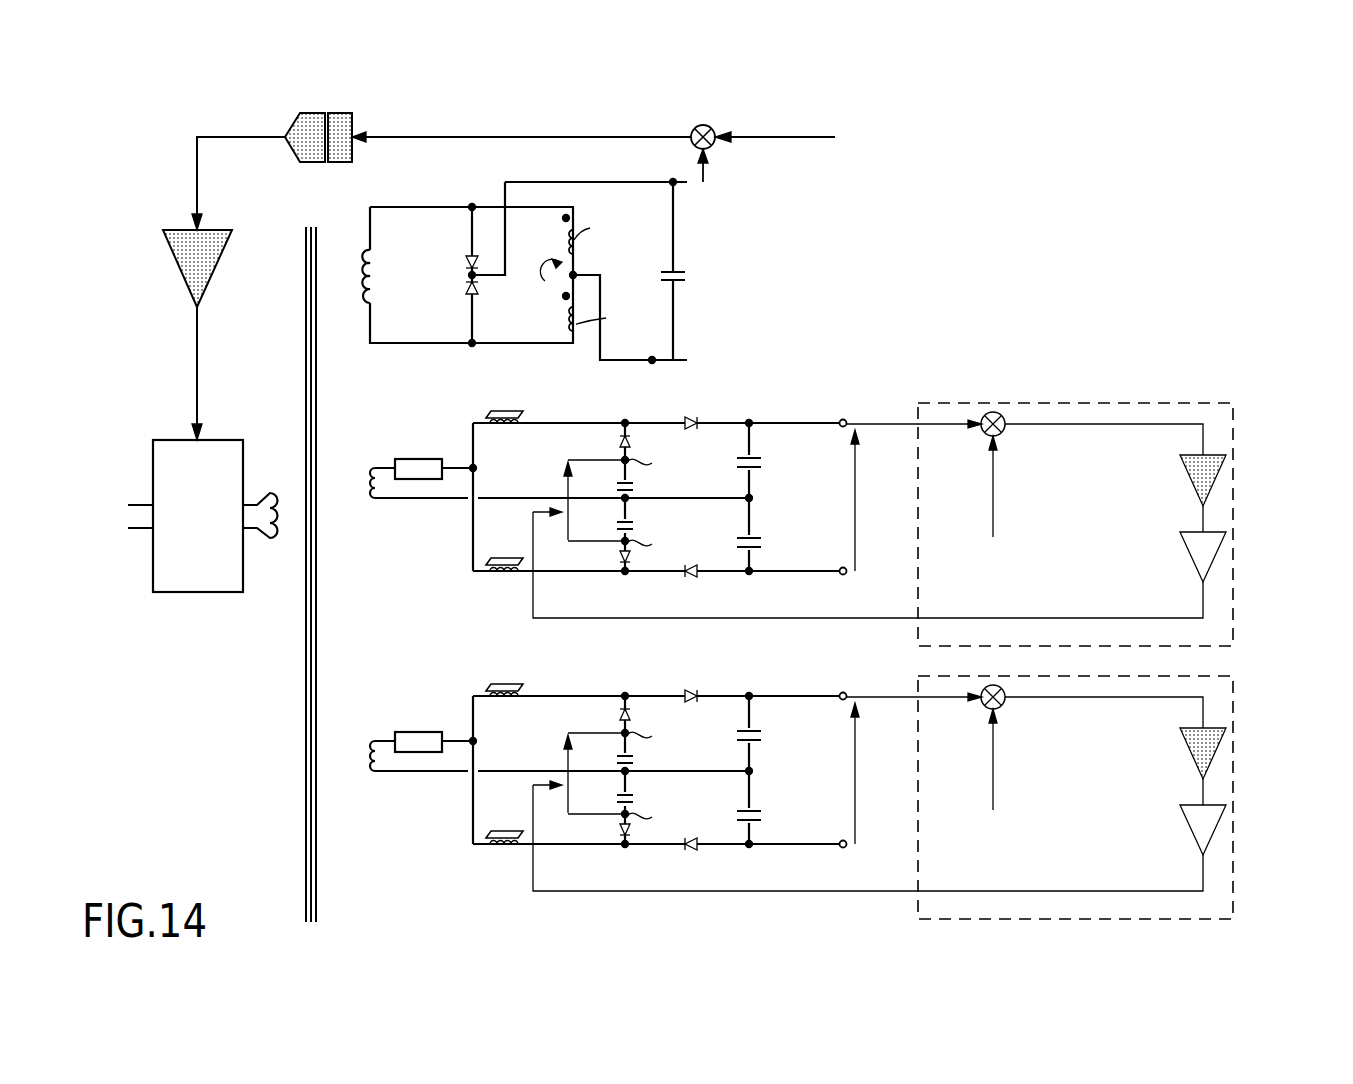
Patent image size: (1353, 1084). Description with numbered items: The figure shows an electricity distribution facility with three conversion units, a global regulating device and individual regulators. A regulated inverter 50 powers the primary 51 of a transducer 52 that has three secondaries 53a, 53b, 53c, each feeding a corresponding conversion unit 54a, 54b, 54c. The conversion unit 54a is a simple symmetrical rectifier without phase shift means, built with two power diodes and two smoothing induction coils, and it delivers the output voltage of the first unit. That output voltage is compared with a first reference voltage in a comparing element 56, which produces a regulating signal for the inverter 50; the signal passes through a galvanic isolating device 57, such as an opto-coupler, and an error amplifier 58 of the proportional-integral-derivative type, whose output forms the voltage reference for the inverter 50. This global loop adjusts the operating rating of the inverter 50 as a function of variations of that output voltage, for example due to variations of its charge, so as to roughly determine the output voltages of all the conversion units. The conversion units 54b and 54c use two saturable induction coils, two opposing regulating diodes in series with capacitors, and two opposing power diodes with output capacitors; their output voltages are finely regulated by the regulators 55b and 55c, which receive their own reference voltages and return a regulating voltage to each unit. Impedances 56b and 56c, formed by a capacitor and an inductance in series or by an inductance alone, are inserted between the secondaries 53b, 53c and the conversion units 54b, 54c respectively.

The regulated inverter 50 is at (178, 580).
The primary 51 is at (277, 545).
The transducer 52 is at (308, 212).
The secondary 53a is at (368, 264).
The secondary 53b is at (375, 469).
The secondary 53c is at (419, 731).
The conversion unit 54a is at (728, 206).
The conversion unit 54b is at (728, 408).
The conversion unit 54c is at (838, 763).
The regulator 55b is at (1233, 523).
The regulator 55c is at (1090, 797).
The comparing element 56 is at (712, 112).
The impedance 56b is at (430, 466).
The impedance 56c is at (426, 701).
The galvanic isolating device 57 is at (338, 113).
The error amplifier 58 is at (183, 237).